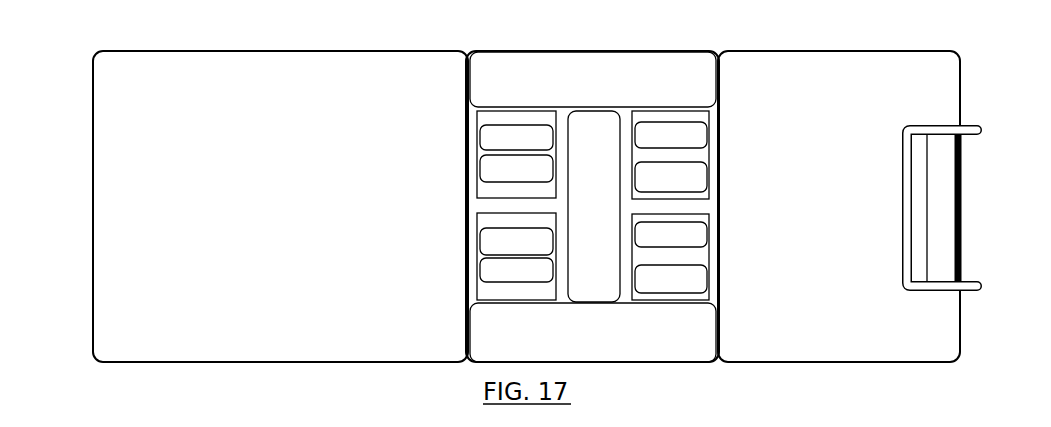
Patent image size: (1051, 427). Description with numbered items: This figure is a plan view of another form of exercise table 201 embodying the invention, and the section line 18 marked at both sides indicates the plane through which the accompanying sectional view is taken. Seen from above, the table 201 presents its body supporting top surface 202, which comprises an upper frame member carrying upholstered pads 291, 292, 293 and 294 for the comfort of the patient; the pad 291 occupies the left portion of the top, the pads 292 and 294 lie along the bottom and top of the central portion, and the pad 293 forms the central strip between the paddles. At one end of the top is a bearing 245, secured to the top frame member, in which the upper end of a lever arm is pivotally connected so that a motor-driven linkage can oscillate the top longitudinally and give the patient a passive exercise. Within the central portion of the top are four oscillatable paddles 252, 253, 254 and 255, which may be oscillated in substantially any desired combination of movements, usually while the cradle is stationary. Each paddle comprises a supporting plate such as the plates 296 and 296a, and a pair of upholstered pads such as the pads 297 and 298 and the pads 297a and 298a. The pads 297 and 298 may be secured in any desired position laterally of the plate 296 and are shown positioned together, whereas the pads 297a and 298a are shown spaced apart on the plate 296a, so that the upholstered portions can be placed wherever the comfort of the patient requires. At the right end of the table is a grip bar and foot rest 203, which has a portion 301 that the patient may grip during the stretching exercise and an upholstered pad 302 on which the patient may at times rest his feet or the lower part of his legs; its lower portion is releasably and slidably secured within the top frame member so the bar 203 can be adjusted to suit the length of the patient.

The section line 18- 18 is at (47, 298).
The table 201 is at (236, 222).
The top surface 202 is at (236, 222).
The grip bar and foot rest 203 is at (971, 190).
The bearing 245 is at (858, 72).
The paddle 252 is at (527, 120).
The paddle 253 is at (496, 276).
The paddle 254 is at (632, 263).
The paddle 255 is at (693, 158).
The upholstered pad 291 is at (355, 352).
The upholstered pad 292 is at (702, 335).
The upholstered pad 293 is at (614, 192).
The upholstered pad 294 is at (655, 70).
The supporting plate 296 is at (527, 288).
The upholstered pad 297 is at (535, 263).
The upholstered pad 298 is at (487, 235).
The supporting plate 296a is at (700, 296).
The upholstered pad 297a is at (718, 257).
The upholstered pad 298a is at (695, 238).
The grip portion 301 is at (905, 192).
The upholstered pad 302 is at (948, 241).